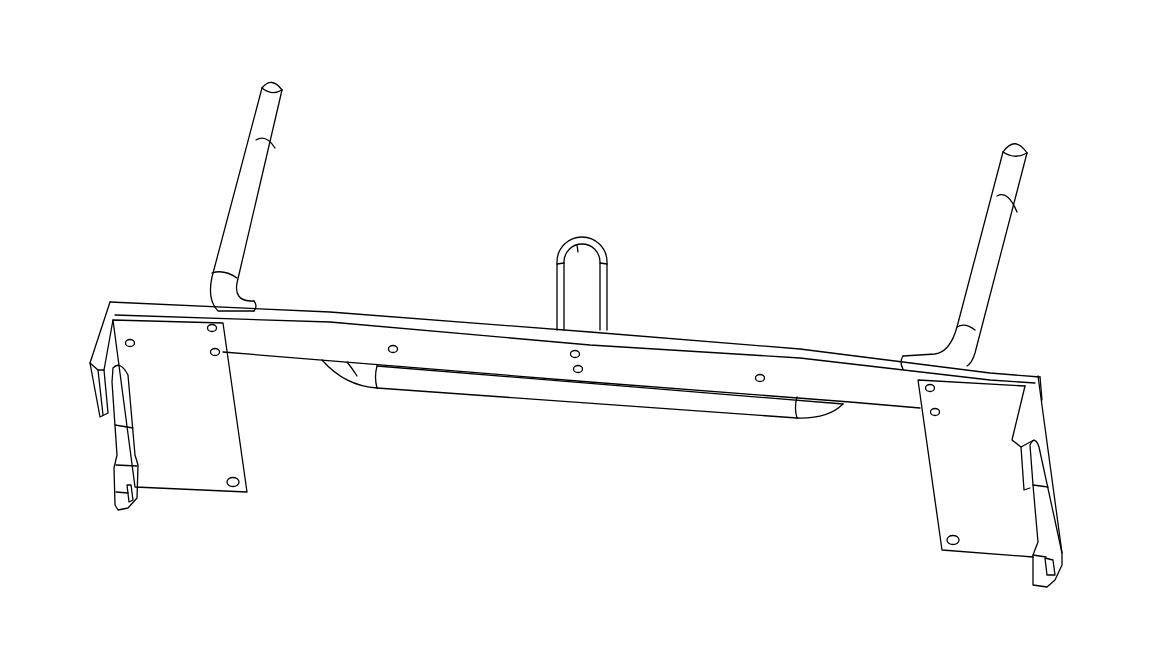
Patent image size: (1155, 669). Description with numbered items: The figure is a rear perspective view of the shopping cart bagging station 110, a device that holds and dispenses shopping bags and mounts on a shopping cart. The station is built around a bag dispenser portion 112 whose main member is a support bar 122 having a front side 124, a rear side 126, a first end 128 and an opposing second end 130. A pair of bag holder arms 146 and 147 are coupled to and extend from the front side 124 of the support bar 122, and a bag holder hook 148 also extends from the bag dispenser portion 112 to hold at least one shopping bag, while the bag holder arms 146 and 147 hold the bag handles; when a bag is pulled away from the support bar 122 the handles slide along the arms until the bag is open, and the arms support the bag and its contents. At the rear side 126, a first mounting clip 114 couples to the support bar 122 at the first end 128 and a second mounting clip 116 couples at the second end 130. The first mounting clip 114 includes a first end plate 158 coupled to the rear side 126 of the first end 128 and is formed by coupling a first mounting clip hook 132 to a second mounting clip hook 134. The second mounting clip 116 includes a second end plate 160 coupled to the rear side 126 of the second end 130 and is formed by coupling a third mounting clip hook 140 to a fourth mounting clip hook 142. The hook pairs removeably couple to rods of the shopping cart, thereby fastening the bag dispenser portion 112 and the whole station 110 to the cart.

The shopping cart bagging station 110 is at (596, 117).
The bag dispenser portion 112 is at (765, 170).
The first mounting clip 114 is at (1050, 512).
The second mounting clip 116 is at (135, 450).
The support bar 122 is at (447, 350).
The front side 124 is at (748, 272).
The rear side 126 is at (705, 383).
The first end 128 is at (1002, 347).
The second end 130 is at (168, 273).
The first mounting clip hook 132 is at (1027, 440).
The second mounting clip hook 134 is at (1045, 587).
The third mounting clip hook 140 is at (103, 365).
The fourth mounting clip hook 142 is at (127, 508).
The bag holder arm 146 is at (1010, 168).
The bag holder arm 147 is at (272, 104).
The bag holder hook 148 is at (600, 253).
The first end plate 158 is at (953, 503).
The second end plate 160 is at (223, 453).